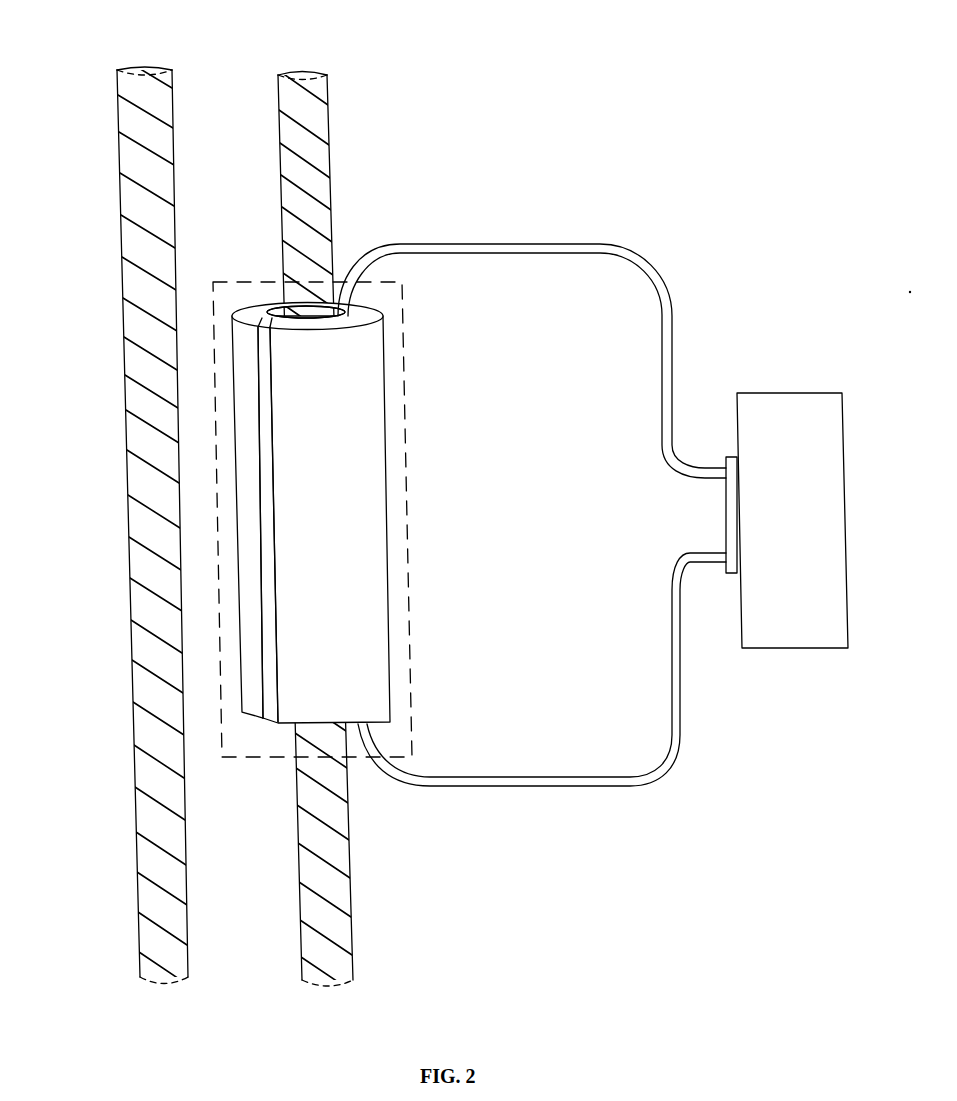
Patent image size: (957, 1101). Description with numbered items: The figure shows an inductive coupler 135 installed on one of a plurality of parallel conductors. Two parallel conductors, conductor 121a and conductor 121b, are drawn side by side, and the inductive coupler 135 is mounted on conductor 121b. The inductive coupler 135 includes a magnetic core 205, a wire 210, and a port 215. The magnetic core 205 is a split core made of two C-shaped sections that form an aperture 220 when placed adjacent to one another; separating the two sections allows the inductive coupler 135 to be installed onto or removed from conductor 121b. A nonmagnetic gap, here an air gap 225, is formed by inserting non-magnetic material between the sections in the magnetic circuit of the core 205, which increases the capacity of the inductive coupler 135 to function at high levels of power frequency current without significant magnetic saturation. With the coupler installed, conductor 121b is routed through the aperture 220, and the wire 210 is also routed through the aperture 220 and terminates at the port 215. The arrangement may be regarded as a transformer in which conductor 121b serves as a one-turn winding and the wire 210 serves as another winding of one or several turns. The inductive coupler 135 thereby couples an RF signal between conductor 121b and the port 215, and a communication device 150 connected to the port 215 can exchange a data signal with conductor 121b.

The conductor 121a is at (128, 118).
The conductor 121b is at (297, 118).
The inductive coupler 135 is at (410, 352).
The communication device 150 is at (790, 652).
The magnetic core 205 is at (366, 528).
The wire 210 is at (553, 790).
The port 215 is at (728, 455).
The aperture 220 is at (270, 312).
The air gap 225 is at (274, 693).